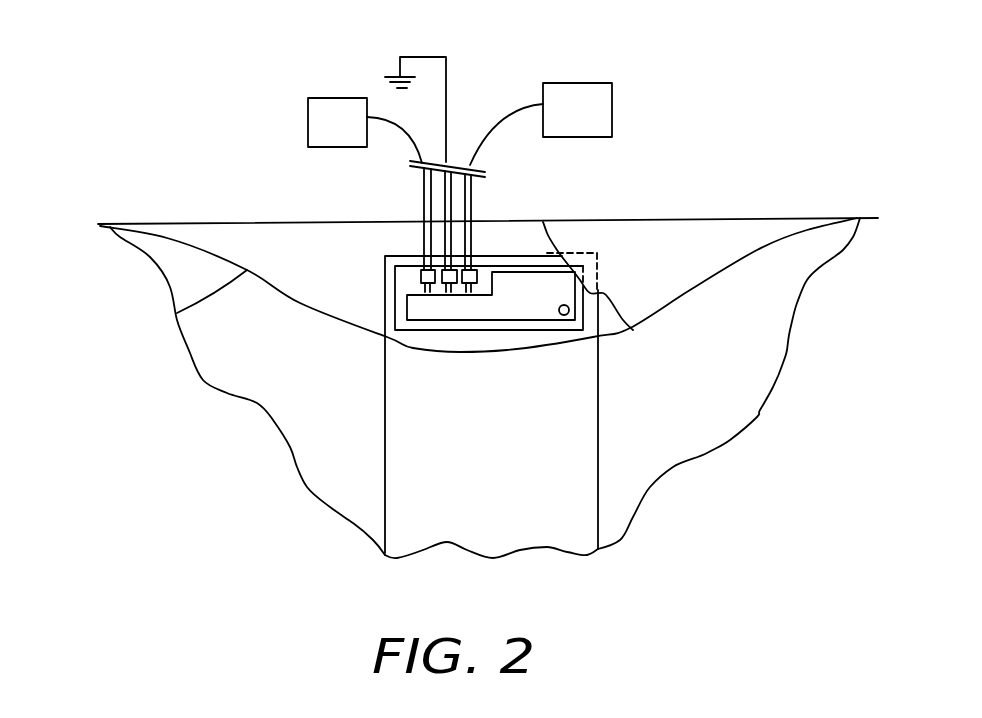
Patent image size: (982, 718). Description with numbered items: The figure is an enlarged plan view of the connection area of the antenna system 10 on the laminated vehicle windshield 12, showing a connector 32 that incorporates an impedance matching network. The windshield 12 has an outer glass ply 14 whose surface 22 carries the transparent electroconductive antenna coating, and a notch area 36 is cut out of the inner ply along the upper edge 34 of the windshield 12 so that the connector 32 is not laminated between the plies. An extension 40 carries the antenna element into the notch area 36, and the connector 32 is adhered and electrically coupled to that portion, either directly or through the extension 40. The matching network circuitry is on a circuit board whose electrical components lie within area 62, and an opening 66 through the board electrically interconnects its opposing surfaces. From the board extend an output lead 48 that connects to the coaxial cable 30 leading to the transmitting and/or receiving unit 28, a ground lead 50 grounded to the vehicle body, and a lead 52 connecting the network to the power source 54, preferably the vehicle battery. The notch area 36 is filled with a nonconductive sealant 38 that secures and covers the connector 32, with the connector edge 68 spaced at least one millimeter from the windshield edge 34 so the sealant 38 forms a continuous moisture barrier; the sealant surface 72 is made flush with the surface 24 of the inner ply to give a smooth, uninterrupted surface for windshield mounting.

The antenna system 10 is at (170, 453).
The laminated vehicle windshield 12 is at (810, 282).
The outer glass ply 14 is at (742, 220).
The surface of glass ply 22 is at (292, 238).
The surface of inner ply 24 is at (735, 355).
The electro-magnetic energy transmitting and/or receiving unit 28 is at (577, 110).
The coaxial cable 30 is at (505, 122).
The connector 32 is at (433, 330).
The upper edge of the windshield 34 is at (140, 223).
The notch area 36 is at (175, 314).
The sealant material 38 is at (685, 233).
The extension 40 is at (387, 493).
The output lead 48 is at (473, 187).
The ground lead 50 is at (440, 200).
The lead 52 is at (425, 182).
The power source 54 is at (365, 130).
The area 62 is at (498, 330).
The opening 66 is at (564, 315).
The edge of the connector 68 is at (505, 265).
The surface of the sealant 72 is at (625, 225).